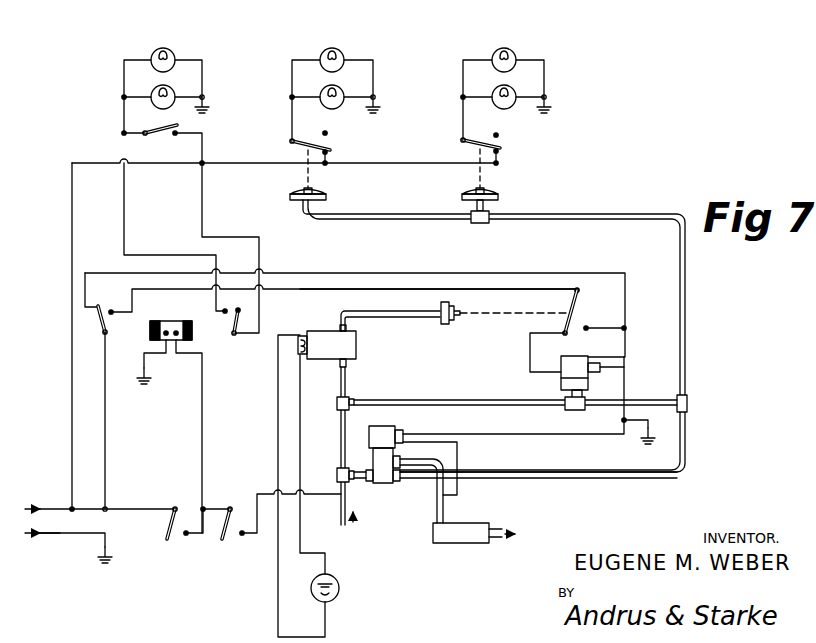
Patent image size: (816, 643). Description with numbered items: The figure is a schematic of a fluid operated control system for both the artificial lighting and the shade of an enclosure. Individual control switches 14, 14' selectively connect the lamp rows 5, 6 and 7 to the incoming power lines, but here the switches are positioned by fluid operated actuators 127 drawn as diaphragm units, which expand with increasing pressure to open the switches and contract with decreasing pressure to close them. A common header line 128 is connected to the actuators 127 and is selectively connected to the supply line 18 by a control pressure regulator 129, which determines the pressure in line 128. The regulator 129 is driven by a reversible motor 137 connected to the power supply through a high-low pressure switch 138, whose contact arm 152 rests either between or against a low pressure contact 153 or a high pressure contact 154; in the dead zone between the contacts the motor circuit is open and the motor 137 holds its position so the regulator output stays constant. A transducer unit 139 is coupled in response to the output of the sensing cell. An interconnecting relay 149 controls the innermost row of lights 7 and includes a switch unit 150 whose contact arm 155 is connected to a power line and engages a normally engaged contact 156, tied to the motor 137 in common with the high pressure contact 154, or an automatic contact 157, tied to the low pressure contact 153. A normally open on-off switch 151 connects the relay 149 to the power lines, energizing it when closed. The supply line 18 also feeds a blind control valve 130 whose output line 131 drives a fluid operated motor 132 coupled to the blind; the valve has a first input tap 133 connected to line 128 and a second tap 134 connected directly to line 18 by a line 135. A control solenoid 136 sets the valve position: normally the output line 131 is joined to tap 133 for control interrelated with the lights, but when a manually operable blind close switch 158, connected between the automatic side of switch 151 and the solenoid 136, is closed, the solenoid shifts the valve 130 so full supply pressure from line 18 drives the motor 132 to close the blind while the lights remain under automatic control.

The lamp row 7 is at (179, 40).
The lamp row 6 is at (347, 43).
The lamp row 5 is at (519, 43).
The control switch 14 is at (162, 157).
The control switch 14' is at (513, 148).
The fluid operated actuator 127 is at (327, 199).
The common header line 128 is at (626, 200).
The contact arm 152 is at (556, 304).
The low pressure contact 153 is at (560, 326).
The high-low pressure switch 138 is at (585, 312).
The high pressure contact 154 is at (590, 328).
The reversible motor 137 is at (602, 344).
The control pressure regulator 129 is at (570, 412).
The transducer unit 139 is at (358, 343).
The interconnecting relay 149 is at (184, 298).
The automatic contact 157 is at (122, 290).
The normally engaged contact 156 is at (96, 308).
The contact arm 155 is at (102, 322).
The switch unit 150 is at (95, 337).
The on-off switch 151 is at (175, 542).
The blind close switch 158 is at (237, 542).
The supply line 18 is at (341, 428).
The line 135 is at (348, 470).
The second tap 134 is at (347, 478).
The control solenoid 136 is at (380, 434).
The blind control valve 130 is at (384, 482).
The first input tap 133 is at (398, 480).
The output line 131 is at (443, 512).
The fluid operated motor 132 is at (478, 543).